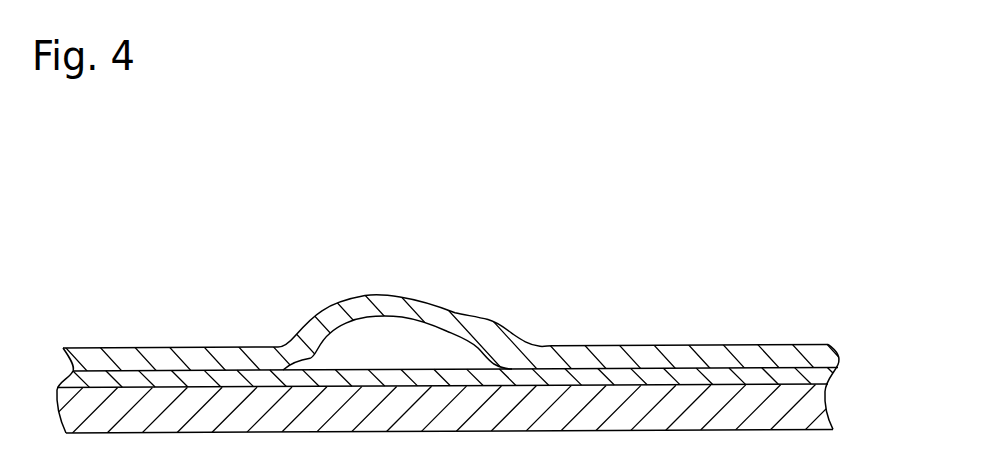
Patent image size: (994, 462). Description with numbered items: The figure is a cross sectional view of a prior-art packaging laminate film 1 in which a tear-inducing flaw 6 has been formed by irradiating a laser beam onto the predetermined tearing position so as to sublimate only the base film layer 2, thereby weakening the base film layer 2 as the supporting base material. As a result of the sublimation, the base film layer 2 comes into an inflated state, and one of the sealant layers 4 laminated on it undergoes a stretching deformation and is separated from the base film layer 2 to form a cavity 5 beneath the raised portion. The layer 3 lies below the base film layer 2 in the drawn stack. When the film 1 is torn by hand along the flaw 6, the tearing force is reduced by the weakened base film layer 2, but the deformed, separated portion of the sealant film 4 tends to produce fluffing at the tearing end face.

The packaging laminate film 1 is at (462, 324).
The base film layer 2 is at (818, 372).
The base material 3 is at (805, 408).
The sealant layer 4 is at (815, 352).
The cavity 5 is at (387, 343).
The tear-inducing flaw 6 is at (323, 300).